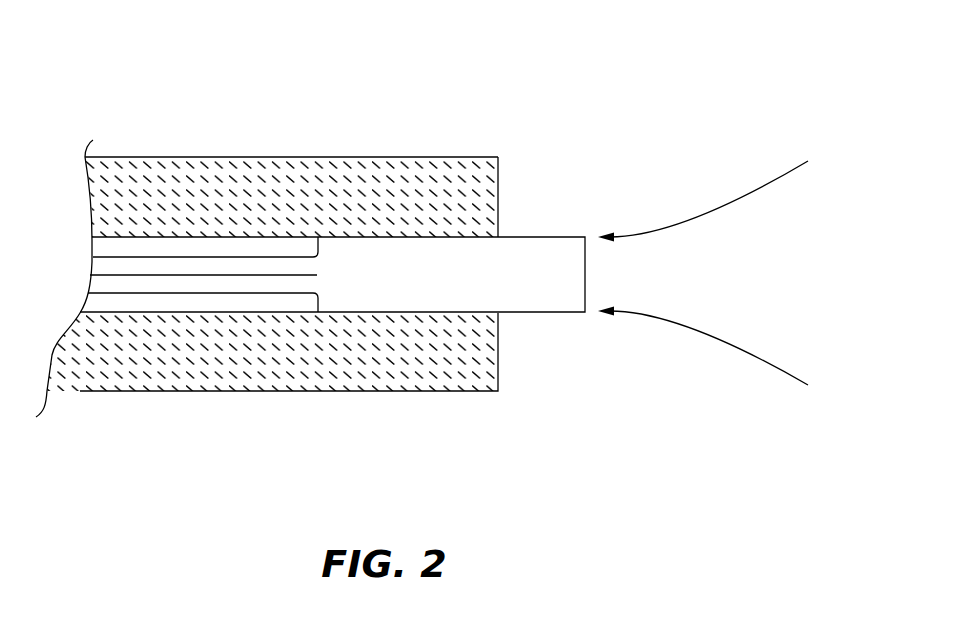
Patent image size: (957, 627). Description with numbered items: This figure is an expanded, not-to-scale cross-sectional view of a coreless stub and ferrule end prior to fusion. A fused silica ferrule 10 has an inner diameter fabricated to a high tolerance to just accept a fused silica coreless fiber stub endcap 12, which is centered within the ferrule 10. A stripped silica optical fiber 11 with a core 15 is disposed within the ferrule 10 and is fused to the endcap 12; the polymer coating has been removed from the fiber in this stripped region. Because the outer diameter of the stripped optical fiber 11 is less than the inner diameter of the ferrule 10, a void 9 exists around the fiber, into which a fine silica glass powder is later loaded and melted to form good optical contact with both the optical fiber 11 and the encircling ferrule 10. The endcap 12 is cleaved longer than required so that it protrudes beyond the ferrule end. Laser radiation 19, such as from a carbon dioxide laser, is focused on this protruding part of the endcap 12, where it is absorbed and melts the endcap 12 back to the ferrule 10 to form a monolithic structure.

The fused silica ferrule 10 is at (192, 172).
The void 9 is at (245, 242).
The endcap 12 is at (368, 258).
The core 15 is at (243, 275).
The optical fiber 11 is at (148, 288).
The laser radiation 19 is at (699, 344).